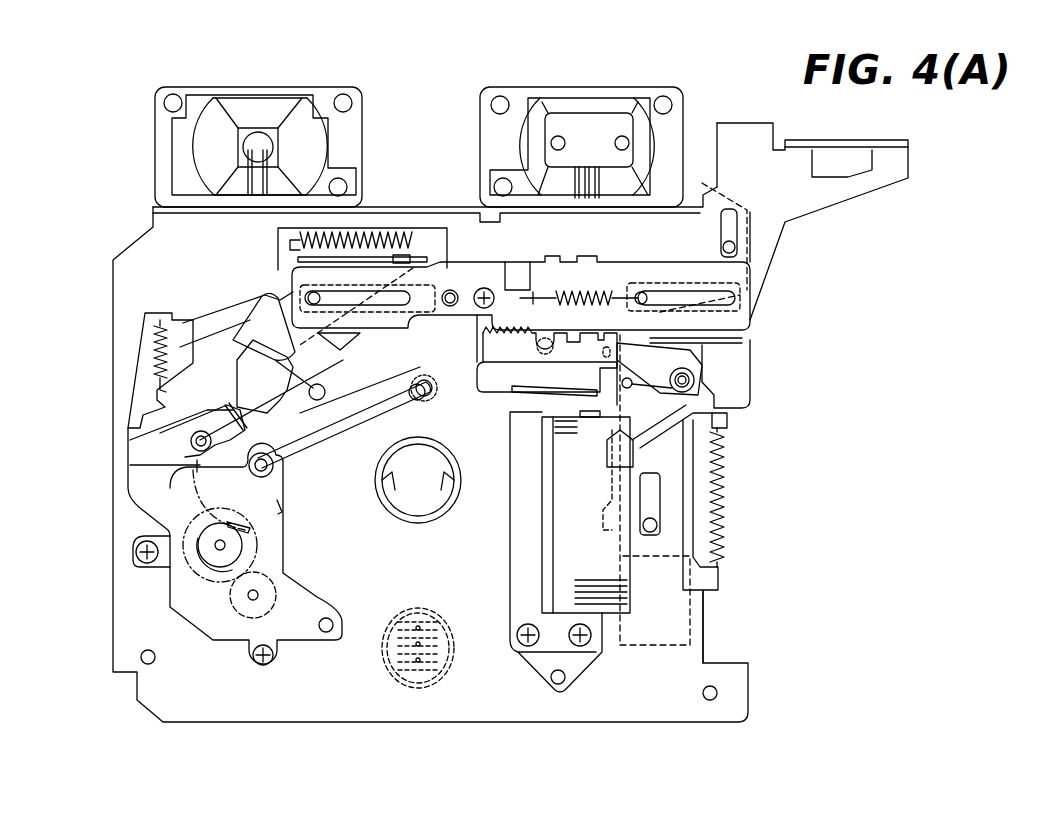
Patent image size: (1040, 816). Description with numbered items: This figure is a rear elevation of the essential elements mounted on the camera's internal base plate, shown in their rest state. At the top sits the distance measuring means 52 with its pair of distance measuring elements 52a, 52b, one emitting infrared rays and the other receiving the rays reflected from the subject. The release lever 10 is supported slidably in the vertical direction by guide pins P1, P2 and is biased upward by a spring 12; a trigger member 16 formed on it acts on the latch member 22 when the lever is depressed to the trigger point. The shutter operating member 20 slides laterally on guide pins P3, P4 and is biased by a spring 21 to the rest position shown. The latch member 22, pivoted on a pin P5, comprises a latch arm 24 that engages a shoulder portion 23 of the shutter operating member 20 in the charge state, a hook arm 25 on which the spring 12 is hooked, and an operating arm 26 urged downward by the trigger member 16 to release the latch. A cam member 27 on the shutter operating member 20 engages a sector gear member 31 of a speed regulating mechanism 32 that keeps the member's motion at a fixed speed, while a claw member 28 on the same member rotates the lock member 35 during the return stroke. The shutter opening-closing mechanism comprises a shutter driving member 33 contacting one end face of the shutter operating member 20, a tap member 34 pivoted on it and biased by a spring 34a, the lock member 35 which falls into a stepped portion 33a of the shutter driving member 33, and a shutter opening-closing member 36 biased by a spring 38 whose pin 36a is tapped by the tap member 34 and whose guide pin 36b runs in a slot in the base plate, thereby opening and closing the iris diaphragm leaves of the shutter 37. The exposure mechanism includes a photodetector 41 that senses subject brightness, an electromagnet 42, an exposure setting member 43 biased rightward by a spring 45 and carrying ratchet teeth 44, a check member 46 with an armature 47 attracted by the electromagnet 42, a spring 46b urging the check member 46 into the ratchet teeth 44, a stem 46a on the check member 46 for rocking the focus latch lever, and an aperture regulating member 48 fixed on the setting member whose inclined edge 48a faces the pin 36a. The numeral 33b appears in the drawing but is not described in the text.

The release lever 10 is at (797, 200).
The spring 12 is at (723, 473).
The trigger member 16 is at (620, 407).
The shutter operating member 20 is at (594, 260).
The spring 21 is at (372, 230).
The latch member 22 is at (757, 380).
The shoulder portion 23 is at (707, 342).
The latch arm 24 is at (707, 355).
The hook arm 25 is at (730, 418).
The operating arm 26 is at (707, 400).
The cam member 27 is at (245, 355).
The claw member 28 is at (402, 258).
The sector gear member 31 is at (196, 465).
The speed regulating mechanism 32 is at (207, 573).
The shutter driving member 33 is at (147, 493).
The stepped portion 33a is at (287, 393).
The spring 33b is at (153, 358).
The tap member 34 is at (305, 495).
The spring 34a is at (130, 440).
The lock member 35 is at (253, 318).
The shutter opening-closing member 36 is at (340, 439).
The pin 36a is at (300, 470).
The guide pin 36b is at (370, 400).
The shutter 37 is at (423, 503).
The spring 38 is at (267, 295).
The photodetector 41 is at (392, 613).
The electromagnet 42 is at (572, 564).
The exposure setting member 43 is at (521, 285).
The ratchet teeth 44 is at (535, 316).
The spring 45 is at (573, 292).
The check member 46 is at (540, 410).
The stem 46a is at (542, 336).
The spring 46b is at (680, 392).
The armature 47 is at (530, 396).
The aperture regulating member 48 is at (461, 338).
The inclined edge 48a is at (432, 392).
The distance measuring means 52 is at (419, 141).
The distance measuring element 52a is at (303, 143).
The distance measuring element 52b is at (557, 157).
The guide pin P1 is at (737, 247).
The guide pin P2 is at (658, 525).
The guide pin P3 is at (643, 294).
The guide pin P4 is at (314, 296).
The pin P5 is at (690, 380).